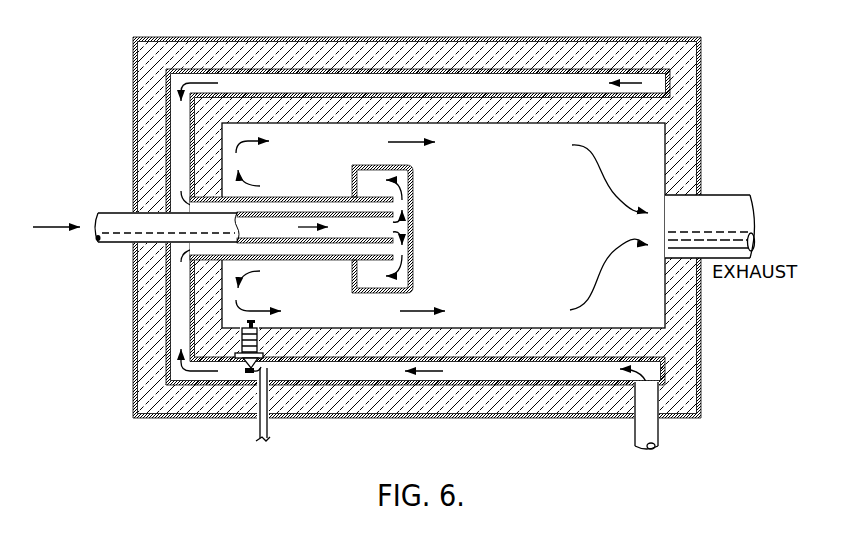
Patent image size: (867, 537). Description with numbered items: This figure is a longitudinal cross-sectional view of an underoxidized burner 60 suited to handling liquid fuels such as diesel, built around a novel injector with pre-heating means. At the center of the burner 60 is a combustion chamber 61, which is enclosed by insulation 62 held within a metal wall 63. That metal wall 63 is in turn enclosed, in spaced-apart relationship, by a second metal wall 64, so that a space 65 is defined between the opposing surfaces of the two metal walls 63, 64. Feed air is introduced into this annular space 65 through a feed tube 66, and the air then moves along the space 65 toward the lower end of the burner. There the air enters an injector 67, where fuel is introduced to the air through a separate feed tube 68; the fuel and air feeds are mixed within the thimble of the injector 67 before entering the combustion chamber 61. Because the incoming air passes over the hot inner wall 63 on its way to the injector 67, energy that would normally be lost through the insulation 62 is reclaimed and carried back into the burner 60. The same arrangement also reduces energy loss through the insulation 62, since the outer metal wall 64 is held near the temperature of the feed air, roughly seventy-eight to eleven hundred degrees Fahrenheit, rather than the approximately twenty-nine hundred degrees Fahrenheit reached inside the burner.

The underoxidized burner 60 is at (120, 347).
The combustion chamber 61 is at (497, 238).
The insulation 62 is at (502, 337).
The metal wall 63 is at (494, 357).
The metal wall 64 is at (378, 376).
The space 65 is at (309, 372).
The feed tube 66 is at (633, 428).
The injector 67 is at (437, 200).
The feed tube 68 is at (113, 212).